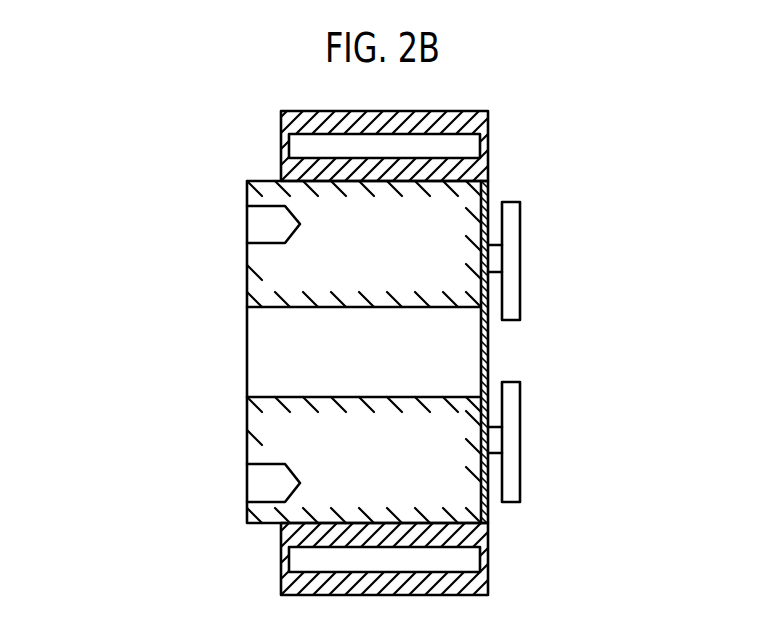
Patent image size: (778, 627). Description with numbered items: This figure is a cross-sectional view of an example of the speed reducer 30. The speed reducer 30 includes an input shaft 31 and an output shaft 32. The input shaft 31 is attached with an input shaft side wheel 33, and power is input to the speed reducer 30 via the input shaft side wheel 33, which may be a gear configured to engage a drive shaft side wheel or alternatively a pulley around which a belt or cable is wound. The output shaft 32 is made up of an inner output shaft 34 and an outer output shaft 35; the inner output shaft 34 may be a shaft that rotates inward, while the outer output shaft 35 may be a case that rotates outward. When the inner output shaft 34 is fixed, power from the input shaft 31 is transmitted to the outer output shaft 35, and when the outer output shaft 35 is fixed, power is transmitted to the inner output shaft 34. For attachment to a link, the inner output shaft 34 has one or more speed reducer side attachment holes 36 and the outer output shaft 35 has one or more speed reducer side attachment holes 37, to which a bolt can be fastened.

The speed reducer 30 is at (341, 345).
The input shaft 31 is at (493, 440).
The output shaft 32 is at (282, 353).
The input shaft side wheel 33 is at (512, 226).
The inner output shaft 34 is at (288, 283).
The outer output shaft 35 is at (292, 122).
The speed reducer side attachment hole 36 is at (269, 238).
The speed reducer side attachment hole 37 is at (358, 547).